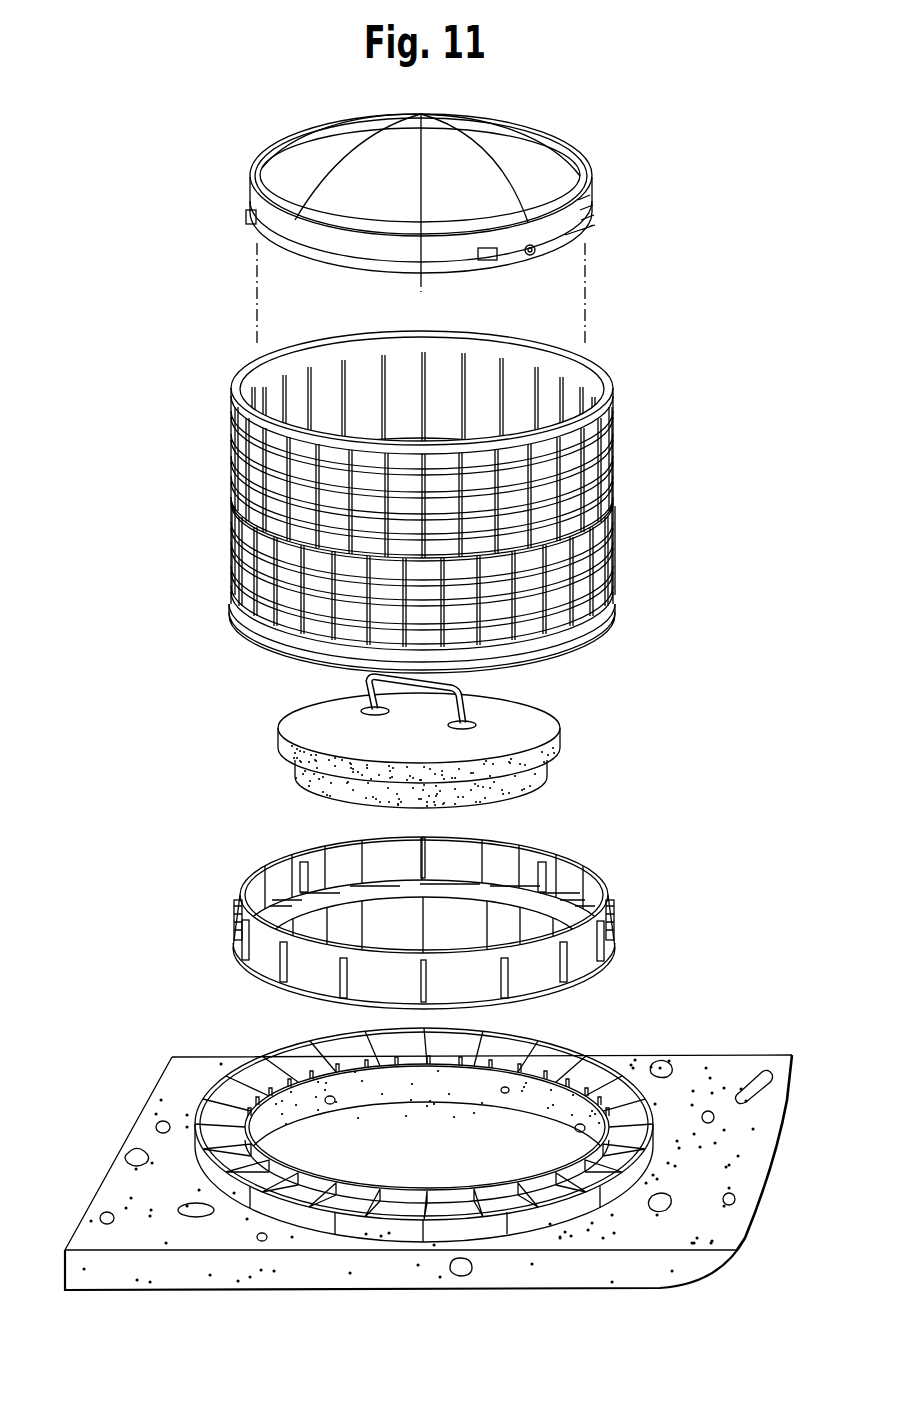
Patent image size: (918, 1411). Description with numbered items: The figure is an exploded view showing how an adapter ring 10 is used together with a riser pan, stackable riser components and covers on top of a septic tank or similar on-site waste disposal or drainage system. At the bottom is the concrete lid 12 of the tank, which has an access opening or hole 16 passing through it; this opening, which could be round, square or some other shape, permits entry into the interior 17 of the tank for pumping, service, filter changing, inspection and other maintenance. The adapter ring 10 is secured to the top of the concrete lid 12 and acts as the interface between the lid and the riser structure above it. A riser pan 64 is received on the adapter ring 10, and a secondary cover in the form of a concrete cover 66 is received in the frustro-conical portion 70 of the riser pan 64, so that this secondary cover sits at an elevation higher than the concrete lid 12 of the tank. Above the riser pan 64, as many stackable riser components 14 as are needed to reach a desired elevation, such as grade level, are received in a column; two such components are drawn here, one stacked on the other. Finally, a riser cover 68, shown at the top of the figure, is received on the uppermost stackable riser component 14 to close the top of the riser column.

The adapter ring 10 is at (428, 1147).
The concrete lid 12 is at (732, 1100).
The stackable riser component 14 is at (618, 437).
The access opening 16 is at (424, 1124).
The interior 17 is at (347, 1130).
The riser pan 64 is at (456, 919).
The concrete cover 66 is at (548, 775).
The riser cover 68 is at (558, 167).
The frustro-conical portion 70 is at (530, 925).